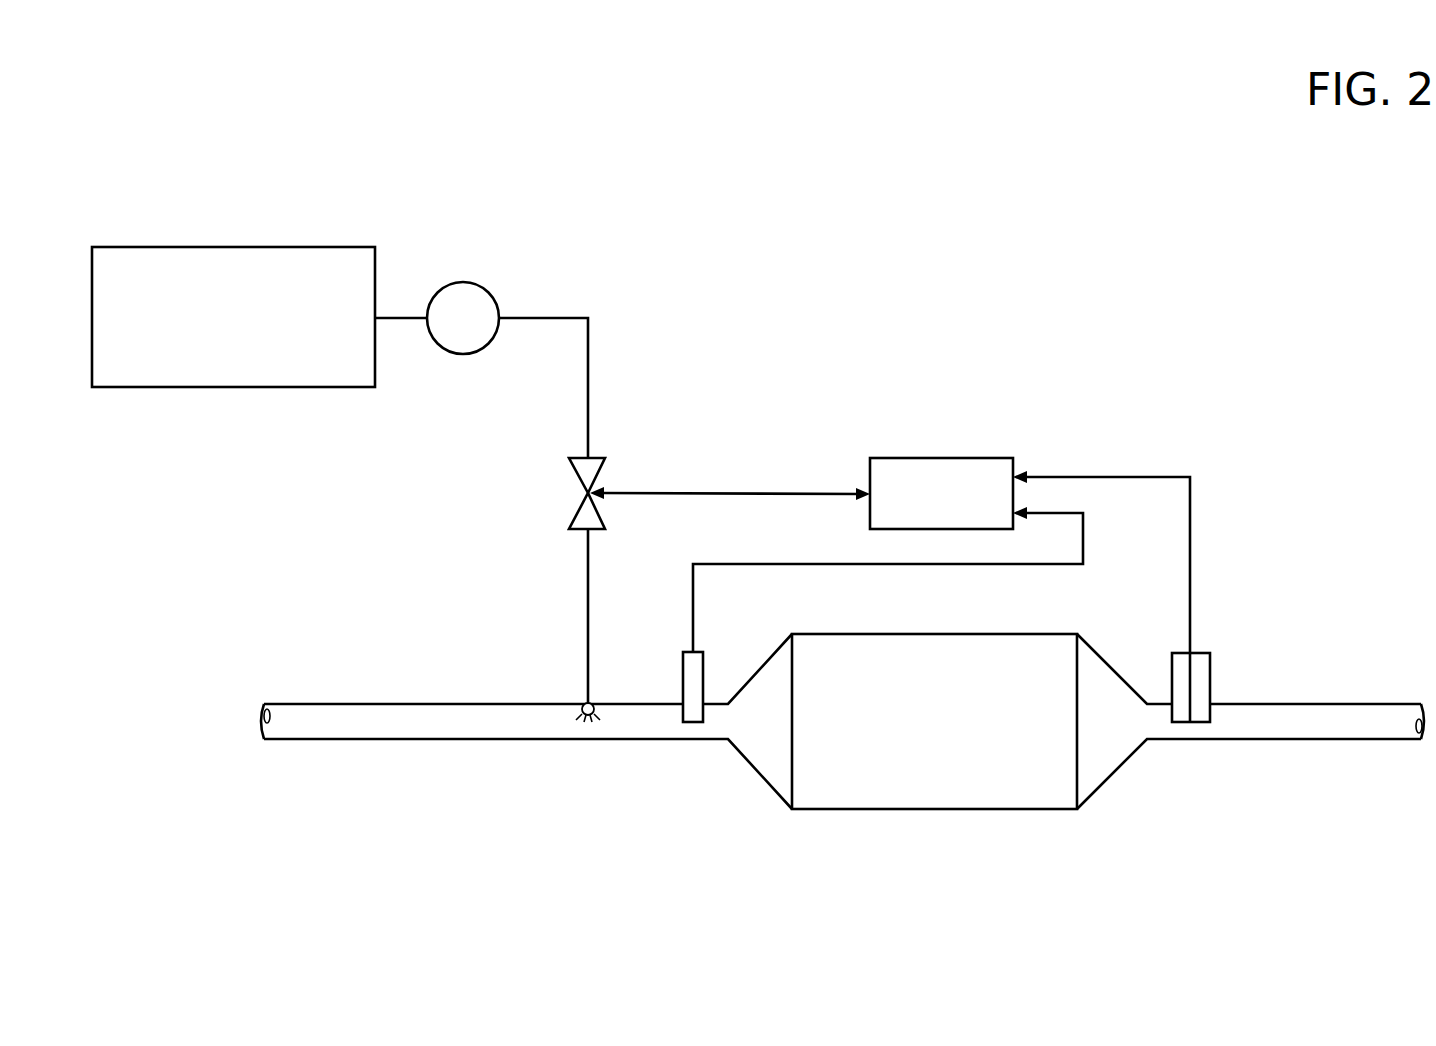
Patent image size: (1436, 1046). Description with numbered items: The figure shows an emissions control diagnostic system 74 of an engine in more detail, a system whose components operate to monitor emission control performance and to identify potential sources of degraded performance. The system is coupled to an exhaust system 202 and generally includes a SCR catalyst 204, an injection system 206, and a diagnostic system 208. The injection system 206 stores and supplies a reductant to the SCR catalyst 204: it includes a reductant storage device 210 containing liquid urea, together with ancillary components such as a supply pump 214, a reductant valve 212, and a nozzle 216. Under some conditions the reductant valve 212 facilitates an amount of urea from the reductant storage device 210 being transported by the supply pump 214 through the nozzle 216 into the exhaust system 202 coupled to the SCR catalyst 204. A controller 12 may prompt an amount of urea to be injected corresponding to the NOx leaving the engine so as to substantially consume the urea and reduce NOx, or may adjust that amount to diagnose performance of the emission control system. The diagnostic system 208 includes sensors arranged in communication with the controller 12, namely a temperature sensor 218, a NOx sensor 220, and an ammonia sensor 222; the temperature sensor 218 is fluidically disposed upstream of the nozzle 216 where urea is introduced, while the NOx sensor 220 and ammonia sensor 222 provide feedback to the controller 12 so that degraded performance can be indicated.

The controller 12 is at (945, 458).
The emissions control diagnostic system 74 is at (1196, 284).
The exhaust system 202 is at (355, 703).
The SCR catalyst 204 is at (935, 809).
The injection system 206 is at (703, 397).
The diagnostic system 208 is at (1214, 440).
The reductant storage device 210 is at (232, 246).
The reductant valve 212 is at (603, 474).
The supply pump 214 is at (466, 282).
The nozzle 216 is at (592, 702).
The temperature sensor 218 is at (705, 670).
The NOx sensor 220 is at (1168, 670).
The ammonia sensor 222 is at (1212, 670).